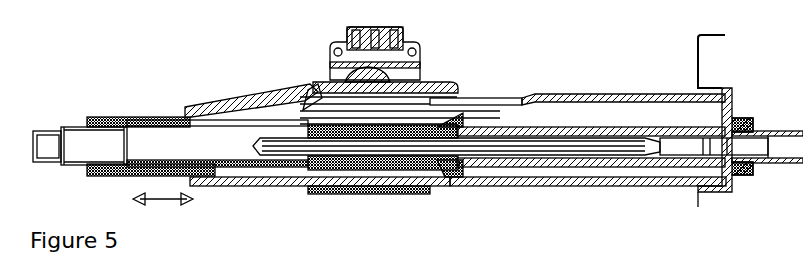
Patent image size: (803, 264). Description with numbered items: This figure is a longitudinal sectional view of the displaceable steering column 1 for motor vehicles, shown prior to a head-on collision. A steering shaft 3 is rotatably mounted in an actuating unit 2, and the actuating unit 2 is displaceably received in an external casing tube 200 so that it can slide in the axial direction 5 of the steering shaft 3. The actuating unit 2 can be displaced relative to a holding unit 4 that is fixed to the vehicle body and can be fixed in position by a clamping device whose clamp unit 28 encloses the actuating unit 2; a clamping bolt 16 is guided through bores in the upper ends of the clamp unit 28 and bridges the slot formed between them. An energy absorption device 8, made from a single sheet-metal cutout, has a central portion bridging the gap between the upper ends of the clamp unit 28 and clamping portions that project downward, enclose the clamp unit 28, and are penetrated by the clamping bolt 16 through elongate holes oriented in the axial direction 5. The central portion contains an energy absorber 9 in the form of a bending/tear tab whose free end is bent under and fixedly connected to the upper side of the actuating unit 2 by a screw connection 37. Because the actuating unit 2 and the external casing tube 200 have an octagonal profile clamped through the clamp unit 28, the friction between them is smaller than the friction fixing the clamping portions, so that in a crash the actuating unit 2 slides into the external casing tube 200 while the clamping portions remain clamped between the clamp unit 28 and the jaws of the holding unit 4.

The steering column 1 is at (568, 62).
The actuating unit 2 is at (293, 184).
The steering shaft 3 is at (82, 126).
The holding unit 4 is at (411, 75).
The axial direction 5 is at (163, 208).
The energy absorption device 8 is at (472, 78).
The energy absorber 9 is at (422, 108).
The clamping bolt 16 is at (338, 88).
The clamp unit 28 is at (363, 188).
The screw connection 37 is at (435, 104).
The external casing tube 200 is at (562, 188).